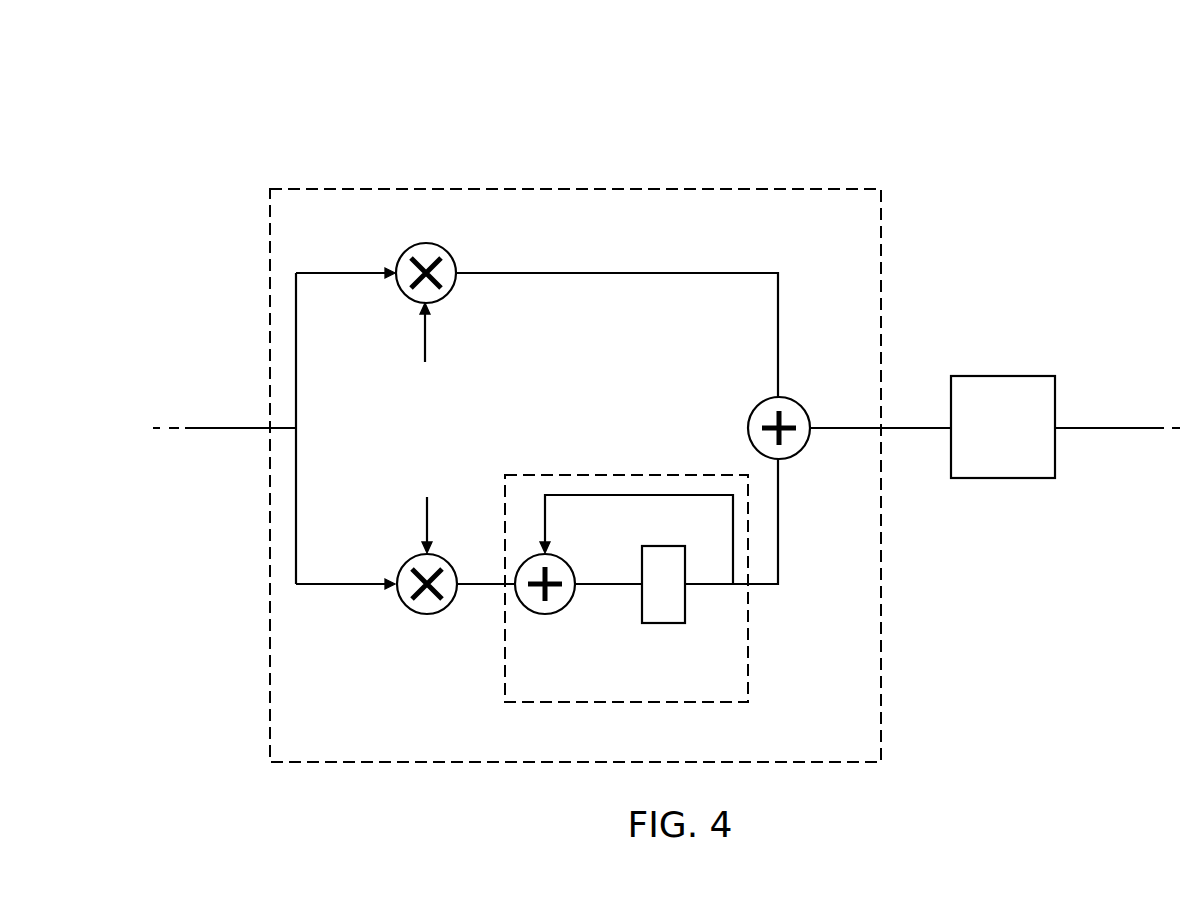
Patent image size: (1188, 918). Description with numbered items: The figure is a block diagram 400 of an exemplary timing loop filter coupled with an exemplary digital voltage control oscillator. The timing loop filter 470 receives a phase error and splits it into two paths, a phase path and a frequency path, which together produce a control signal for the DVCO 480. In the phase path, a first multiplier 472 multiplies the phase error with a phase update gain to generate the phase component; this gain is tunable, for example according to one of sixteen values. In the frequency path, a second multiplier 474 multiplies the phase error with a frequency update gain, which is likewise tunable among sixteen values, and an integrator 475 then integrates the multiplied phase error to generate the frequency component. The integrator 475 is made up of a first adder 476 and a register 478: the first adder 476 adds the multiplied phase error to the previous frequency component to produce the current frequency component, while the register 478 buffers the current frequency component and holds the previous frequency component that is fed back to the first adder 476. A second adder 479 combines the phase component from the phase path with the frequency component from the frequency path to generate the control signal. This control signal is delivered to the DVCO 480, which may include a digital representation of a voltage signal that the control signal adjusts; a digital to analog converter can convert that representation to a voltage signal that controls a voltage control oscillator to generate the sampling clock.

The block diagram 400 is at (940, 118).
The timing loop filter 470 is at (270, 262).
The first multiplier 472 is at (412, 245).
The second multiplier 474 is at (427, 615).
The integrator 475 is at (748, 637).
The first adder 476 is at (545, 615).
The register 478 is at (666, 624).
The second adder 479 is at (748, 429).
The digital voltage control oscillator (DVCO) 480 is at (999, 479).